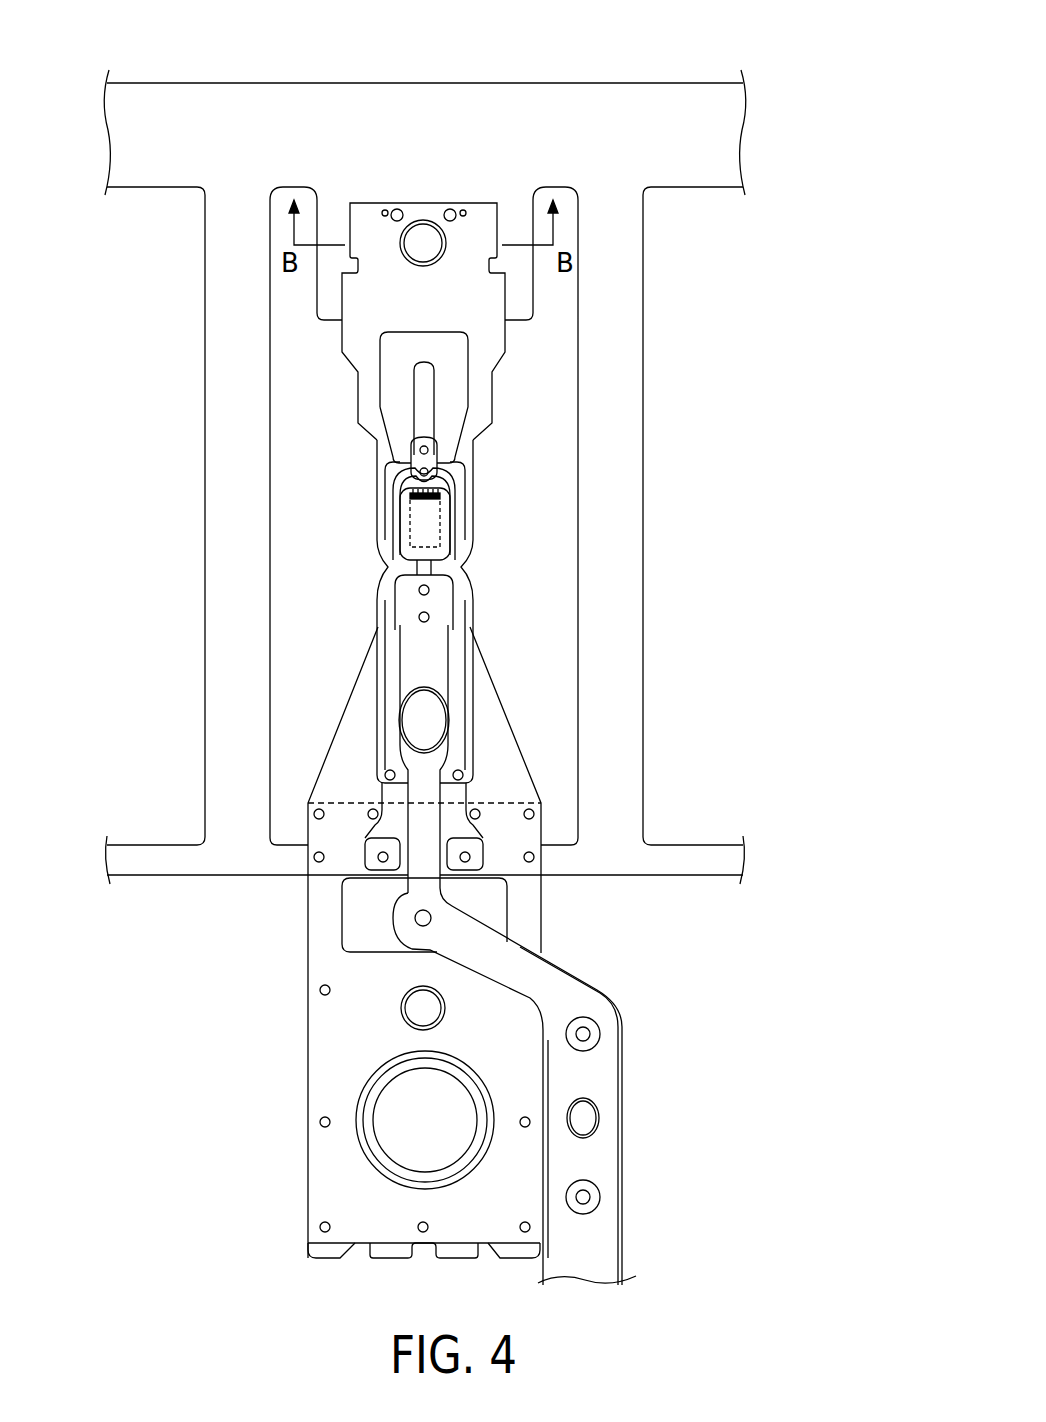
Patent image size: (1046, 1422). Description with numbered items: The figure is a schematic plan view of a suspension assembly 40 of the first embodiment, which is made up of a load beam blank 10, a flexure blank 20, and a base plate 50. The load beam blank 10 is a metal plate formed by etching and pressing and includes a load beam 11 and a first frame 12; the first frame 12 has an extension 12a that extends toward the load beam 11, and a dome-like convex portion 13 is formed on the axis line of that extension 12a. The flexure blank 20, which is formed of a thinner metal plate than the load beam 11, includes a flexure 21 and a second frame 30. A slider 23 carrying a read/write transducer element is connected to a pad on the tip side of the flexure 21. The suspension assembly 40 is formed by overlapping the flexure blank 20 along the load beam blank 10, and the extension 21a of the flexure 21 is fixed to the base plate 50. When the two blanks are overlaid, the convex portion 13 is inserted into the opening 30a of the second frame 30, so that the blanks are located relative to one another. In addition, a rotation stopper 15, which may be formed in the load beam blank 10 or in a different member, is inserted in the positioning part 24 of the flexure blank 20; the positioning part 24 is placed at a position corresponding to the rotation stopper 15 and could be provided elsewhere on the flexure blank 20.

The load beam blank 10 is at (628, 64).
The load beam 11 is at (488, 712).
The first frame 12 is at (288, 132).
The extension 12a is at (360, 296).
The convex portion 13 is at (424, 243).
The rotation stopper 15 is at (590, 1128).
The flexure blank 20 is at (504, 407).
The flexure 21 is at (455, 773).
The extension of the flexure 21a is at (613, 1040).
The slider 23 is at (440, 522).
The positioning part 24 is at (601, 1106).
The second frame 30 is at (360, 340).
The opening 30a is at (455, 240).
The suspension assembly 40 is at (706, 313).
The base plate 50 is at (348, 1018).